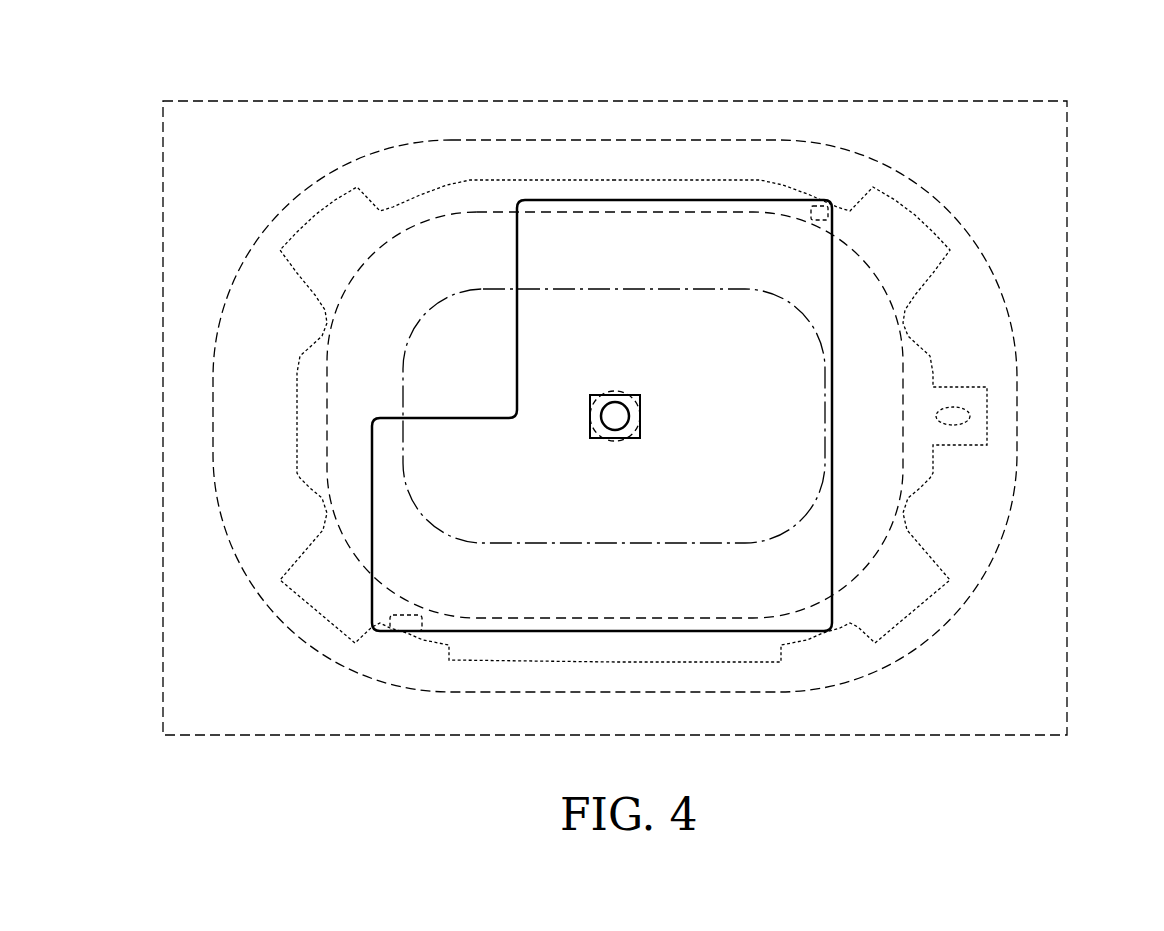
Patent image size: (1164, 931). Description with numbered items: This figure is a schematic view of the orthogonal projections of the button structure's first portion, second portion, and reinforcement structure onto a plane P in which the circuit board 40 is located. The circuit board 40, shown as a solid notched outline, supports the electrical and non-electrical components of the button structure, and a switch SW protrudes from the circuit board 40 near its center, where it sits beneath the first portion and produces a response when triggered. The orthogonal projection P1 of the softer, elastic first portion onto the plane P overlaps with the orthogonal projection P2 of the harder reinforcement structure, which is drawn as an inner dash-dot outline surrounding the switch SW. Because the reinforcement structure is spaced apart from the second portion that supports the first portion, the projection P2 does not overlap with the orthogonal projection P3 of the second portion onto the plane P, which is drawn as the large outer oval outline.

The plane P is at (1067, 221).
The orthogonal projection of the first portion P1 is at (793, 187).
The orthogonal projection of the reinforcement structure P2 is at (700, 290).
The orthogonal projection of the second portion P3 is at (930, 181).
The circuit board 40 is at (517, 260).
The switch SW is at (615, 416).